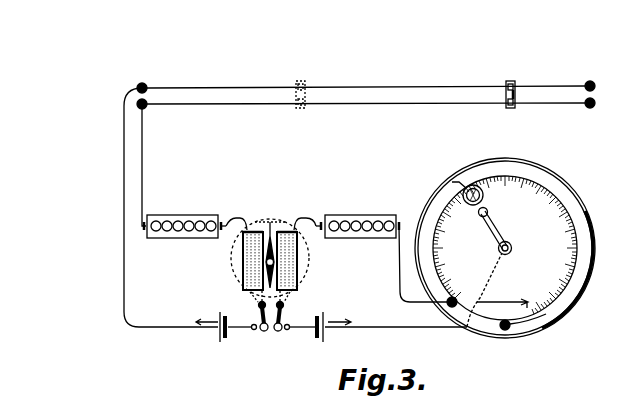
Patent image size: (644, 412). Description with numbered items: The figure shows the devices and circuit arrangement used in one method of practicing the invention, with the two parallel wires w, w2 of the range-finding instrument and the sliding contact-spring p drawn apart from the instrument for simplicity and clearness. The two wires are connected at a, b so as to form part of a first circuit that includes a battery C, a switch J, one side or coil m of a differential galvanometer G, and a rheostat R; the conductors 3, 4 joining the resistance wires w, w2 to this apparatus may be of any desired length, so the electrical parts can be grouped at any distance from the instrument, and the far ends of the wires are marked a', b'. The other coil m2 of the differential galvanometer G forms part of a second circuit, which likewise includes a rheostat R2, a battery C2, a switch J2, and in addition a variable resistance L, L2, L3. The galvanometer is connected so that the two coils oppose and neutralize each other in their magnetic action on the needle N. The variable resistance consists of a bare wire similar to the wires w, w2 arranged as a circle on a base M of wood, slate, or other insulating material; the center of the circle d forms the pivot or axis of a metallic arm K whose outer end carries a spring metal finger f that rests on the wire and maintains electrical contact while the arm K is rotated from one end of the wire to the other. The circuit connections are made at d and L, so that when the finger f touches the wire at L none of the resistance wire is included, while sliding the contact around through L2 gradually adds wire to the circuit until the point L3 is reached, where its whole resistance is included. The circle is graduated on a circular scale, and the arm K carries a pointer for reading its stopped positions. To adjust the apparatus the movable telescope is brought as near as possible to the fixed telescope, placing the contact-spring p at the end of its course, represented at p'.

The connection point a is at (141, 80).
The connection point b is at (146, 110).
The far end line terminal a' is at (597, 86).
The far end line terminal b' is at (598, 104).
The parallel wire w is at (366, 78).
The parallel wire w2 is at (366, 113).
The sliding contact-spring p is at (509, 104).
The end position of contact-spring p' is at (302, 105).
The conductor 3 is at (163, 207).
The conductor 4 is at (148, 165).
The rheostat R is at (185, 236).
The rheostat R2 is at (357, 237).
The differential galvanometer G is at (271, 260).
The needle N is at (270, 262).
The coil of differential galvanometer m is at (252, 303).
The coil of differential galvanometer m2 is at (295, 304).
The switch J is at (248, 327).
The switch J2 is at (294, 329).
The battery C is at (210, 328).
The battery C2 is at (392, 329).
The base M is at (582, 290).
The variable resistance wire L2 is at (549, 188).
The variable resistance wire end L is at (455, 298).
The variable resistance wire end L3 is at (511, 332).
The metallic arm K is at (495, 229).
The center of circle d is at (511, 252).
The spring metal finger f is at (465, 190).